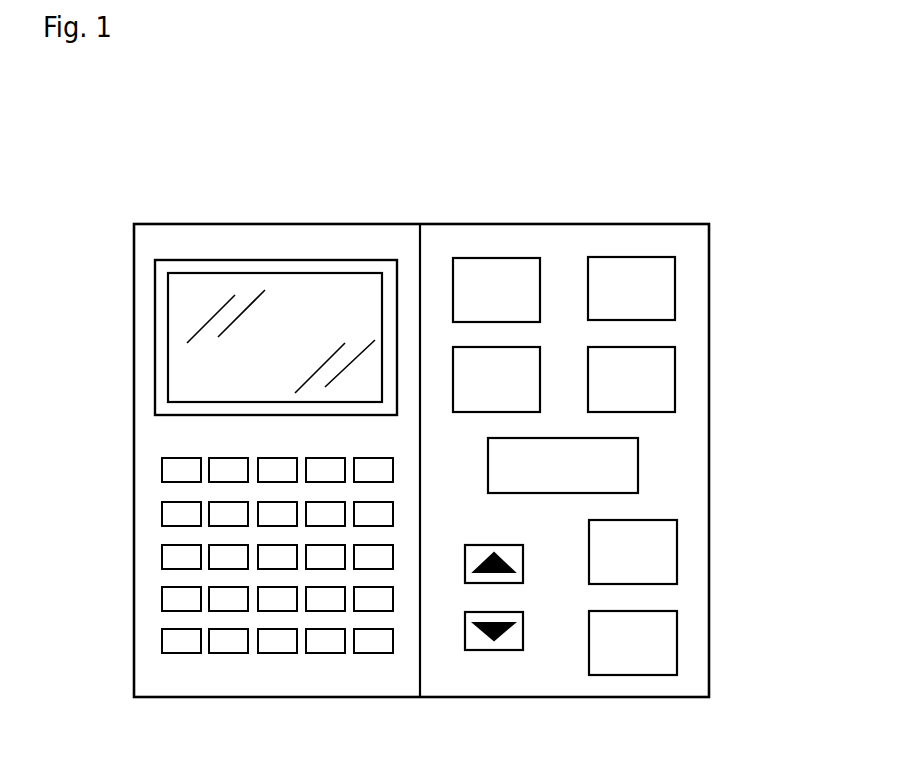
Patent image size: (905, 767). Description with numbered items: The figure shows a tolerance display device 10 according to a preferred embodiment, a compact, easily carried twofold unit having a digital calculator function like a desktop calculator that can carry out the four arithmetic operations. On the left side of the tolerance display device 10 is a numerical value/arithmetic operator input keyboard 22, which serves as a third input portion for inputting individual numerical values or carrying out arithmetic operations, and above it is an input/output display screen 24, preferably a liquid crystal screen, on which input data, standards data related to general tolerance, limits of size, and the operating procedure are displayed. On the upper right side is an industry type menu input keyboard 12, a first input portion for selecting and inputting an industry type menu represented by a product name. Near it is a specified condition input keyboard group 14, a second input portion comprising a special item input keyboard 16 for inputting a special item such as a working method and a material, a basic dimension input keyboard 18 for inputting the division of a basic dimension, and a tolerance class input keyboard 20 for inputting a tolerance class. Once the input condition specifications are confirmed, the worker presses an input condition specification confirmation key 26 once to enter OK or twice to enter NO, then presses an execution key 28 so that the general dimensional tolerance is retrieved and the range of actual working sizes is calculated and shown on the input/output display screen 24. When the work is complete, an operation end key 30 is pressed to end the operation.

The tolerance display device 10 is at (612, 212).
The industry type menu input keyboard 12 is at (492, 258).
The specified condition input keyboard group 14 is at (635, 334).
The special item input keyboard 16 is at (675, 296).
The basic dimension input keyboard 18 is at (540, 355).
The tolerance class input keyboard 20 is at (678, 379).
The numerical value/arithmetic operator input keyboard 22 is at (130, 448).
The input/output display screen 24 is at (153, 275).
The input condition specification confirmation key 26 is at (638, 468).
The execution key 28 is at (677, 643).
The operation end key 30 is at (677, 557).